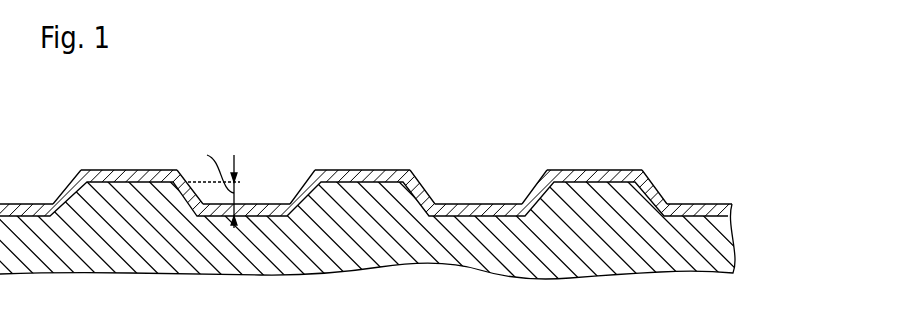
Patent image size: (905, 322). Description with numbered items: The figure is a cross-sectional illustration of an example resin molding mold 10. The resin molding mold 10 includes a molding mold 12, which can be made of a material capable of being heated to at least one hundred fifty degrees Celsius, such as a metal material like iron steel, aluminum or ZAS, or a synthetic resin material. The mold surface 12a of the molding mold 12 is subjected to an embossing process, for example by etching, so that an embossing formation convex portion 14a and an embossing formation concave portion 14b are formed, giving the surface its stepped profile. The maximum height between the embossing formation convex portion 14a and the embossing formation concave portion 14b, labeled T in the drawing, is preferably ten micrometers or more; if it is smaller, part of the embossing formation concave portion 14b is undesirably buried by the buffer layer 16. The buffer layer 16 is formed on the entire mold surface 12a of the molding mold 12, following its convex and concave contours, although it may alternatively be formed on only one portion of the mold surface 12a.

The resin molding mold 10 is at (48, 144).
The molding mold 12 is at (717, 242).
The mold surface 12a is at (471, 211).
The embossing formation convex portion 14a is at (125, 167).
The embossing formation concave portion 14b is at (257, 190).
The buffer layer 16 is at (728, 209).